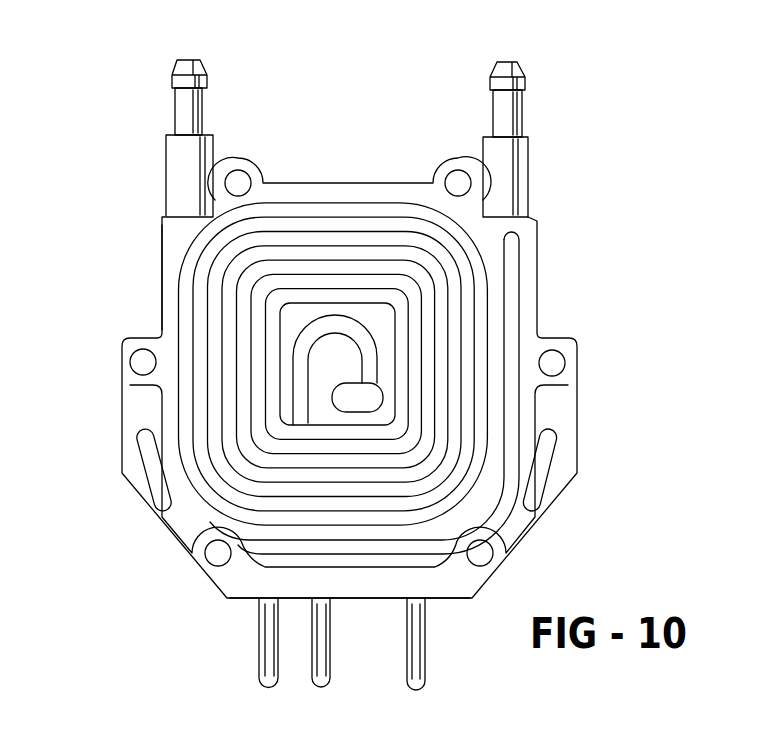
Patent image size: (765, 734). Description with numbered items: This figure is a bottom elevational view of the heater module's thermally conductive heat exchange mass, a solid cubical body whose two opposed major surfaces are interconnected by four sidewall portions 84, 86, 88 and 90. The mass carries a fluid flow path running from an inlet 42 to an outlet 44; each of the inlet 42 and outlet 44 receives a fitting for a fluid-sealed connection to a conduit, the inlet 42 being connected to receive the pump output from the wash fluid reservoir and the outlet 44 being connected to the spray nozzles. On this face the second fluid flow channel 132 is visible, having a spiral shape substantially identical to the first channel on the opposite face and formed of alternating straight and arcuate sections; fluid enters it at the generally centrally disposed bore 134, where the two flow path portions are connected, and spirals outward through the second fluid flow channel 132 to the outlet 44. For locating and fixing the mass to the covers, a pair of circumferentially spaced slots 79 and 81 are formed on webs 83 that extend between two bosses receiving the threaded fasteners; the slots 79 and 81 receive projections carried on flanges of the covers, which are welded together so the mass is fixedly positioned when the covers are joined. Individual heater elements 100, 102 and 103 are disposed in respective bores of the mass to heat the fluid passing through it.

The inlet 42 is at (185, 52).
The outlet 44 is at (504, 47).
The slot 79 is at (143, 467).
The slot 81 is at (560, 470).
The webs 83 is at (127, 397).
The sidewall portion 84 is at (360, 600).
The sidewall portion 86 is at (537, 296).
The sidewall portion 88 is at (343, 183).
The sidewall portion 90 is at (160, 312).
The heater element 100 is at (264, 657).
The heater element 102 is at (320, 657).
The heater element 103 is at (413, 632).
The second fluid flow channel 132 is at (200, 288).
The bore 134 is at (343, 400).